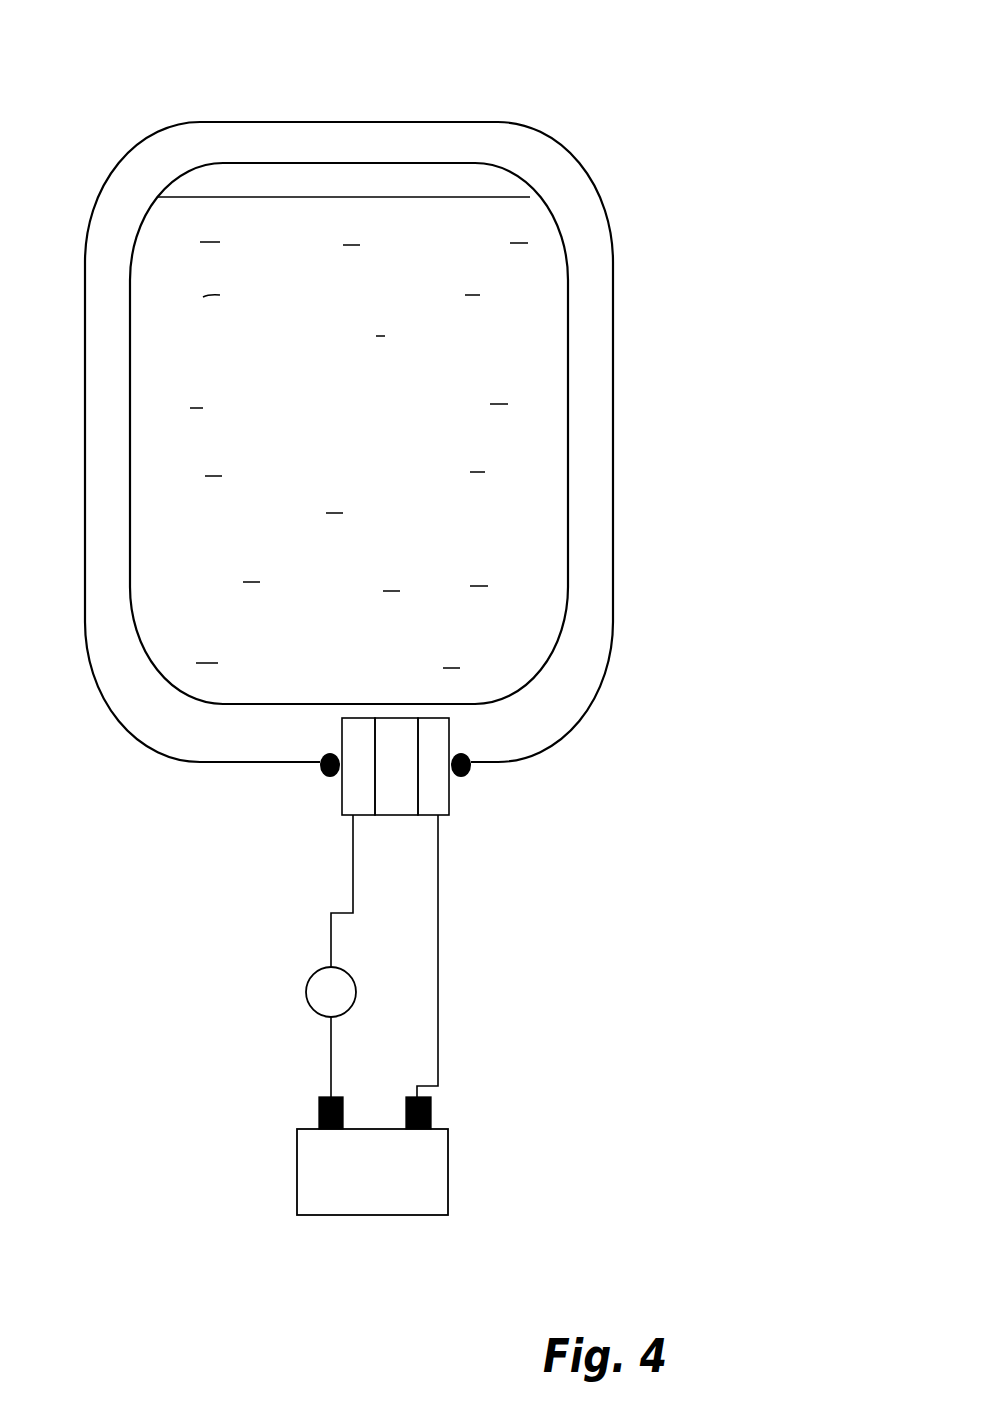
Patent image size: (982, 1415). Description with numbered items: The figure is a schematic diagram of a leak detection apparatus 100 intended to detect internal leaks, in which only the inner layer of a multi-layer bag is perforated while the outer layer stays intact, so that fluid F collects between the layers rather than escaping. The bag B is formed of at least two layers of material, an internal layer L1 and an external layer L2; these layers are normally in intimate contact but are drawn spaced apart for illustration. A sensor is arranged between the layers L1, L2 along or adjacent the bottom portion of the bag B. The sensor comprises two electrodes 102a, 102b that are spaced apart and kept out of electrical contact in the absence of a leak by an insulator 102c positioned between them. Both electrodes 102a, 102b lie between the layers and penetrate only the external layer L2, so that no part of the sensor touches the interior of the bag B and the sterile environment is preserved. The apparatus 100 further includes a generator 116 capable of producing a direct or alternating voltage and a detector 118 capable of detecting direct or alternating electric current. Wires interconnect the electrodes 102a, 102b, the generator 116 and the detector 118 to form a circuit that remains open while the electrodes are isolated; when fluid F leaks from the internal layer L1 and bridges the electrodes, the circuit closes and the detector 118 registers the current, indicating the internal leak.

The leak detection apparatus 100 is at (668, 90).
The bag B is at (655, 425).
The internal layer L1 is at (223, 163).
The external layer L2 is at (398, 118).
The fluid F is at (352, 424).
The electrode 102a is at (343, 802).
The electrode 102b is at (447, 817).
The insulator 102c is at (400, 817).
The detector 118 is at (308, 1005).
The generator 116 is at (450, 1162).